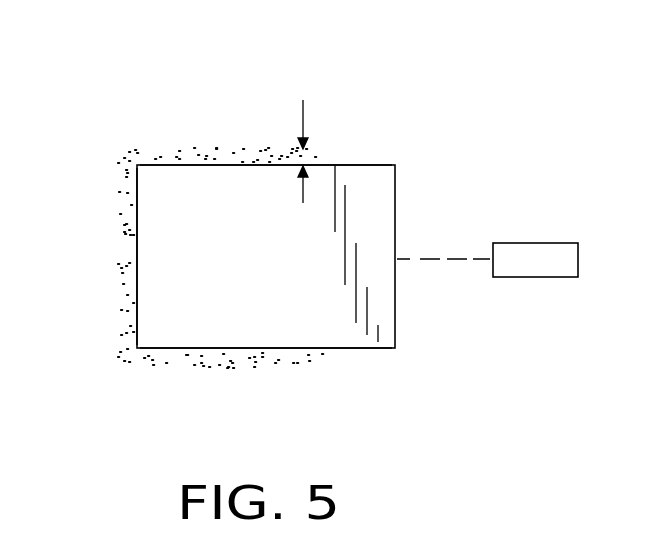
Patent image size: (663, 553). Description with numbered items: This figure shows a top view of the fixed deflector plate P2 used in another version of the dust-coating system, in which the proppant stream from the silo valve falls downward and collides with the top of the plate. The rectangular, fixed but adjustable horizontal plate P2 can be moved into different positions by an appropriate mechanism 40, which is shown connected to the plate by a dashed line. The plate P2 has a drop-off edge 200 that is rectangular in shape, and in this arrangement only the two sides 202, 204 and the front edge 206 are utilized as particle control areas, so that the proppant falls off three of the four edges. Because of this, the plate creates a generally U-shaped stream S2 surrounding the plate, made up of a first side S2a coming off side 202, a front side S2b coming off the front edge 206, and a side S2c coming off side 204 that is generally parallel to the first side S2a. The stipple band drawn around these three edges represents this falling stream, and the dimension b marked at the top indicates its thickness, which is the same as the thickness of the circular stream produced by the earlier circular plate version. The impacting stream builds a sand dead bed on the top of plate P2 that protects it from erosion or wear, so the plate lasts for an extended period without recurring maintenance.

The drop-off edge 200 is at (367, 350).
The side 202 is at (202, 164).
The side 204 is at (282, 351).
The front edge 206 is at (137, 300).
The deflector plate P2 is at (397, 178).
The mechanism 40 is at (548, 250).
The stream S2 is at (172, 146).
The first side S2a is at (230, 150).
The front side S2b is at (128, 248).
The side S2c is at (220, 357).
The thickness b is at (310, 148).